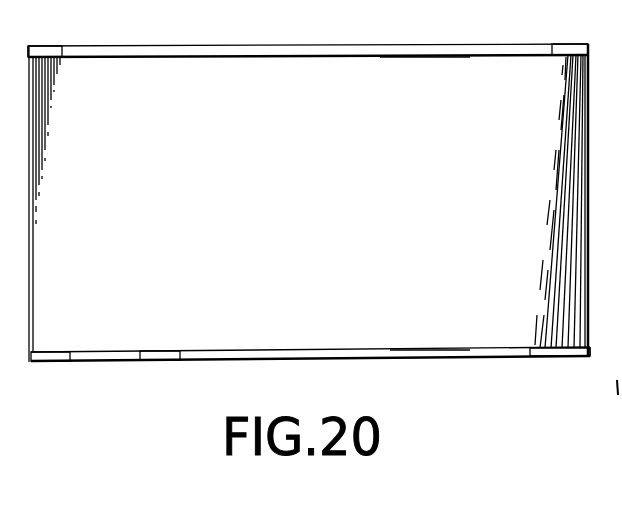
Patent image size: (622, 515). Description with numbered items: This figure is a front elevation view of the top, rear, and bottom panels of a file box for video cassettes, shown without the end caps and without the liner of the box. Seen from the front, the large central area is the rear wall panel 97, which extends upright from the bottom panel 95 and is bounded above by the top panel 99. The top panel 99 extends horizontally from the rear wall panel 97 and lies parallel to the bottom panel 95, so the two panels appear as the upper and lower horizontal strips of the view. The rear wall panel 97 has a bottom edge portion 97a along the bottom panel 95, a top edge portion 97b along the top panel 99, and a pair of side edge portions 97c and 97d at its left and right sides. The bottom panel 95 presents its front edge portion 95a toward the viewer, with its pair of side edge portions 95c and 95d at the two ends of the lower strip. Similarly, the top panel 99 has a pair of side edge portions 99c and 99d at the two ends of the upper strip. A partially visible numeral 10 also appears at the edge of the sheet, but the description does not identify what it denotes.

The assembly 10 is at (614, 21).
The bottom panel 95 is at (303, 352).
The front edge portion 95a is at (158, 353).
The side edge portion 95c is at (55, 354).
The side edge portion 95d is at (548, 339).
The rear wall panel 97 is at (322, 196).
The bottom edge portion 97a is at (429, 335).
The top edge portion 97b is at (421, 65).
The side edge portion 97c is at (40, 208).
The side edge portion 97d is at (572, 223).
The top panel 99 is at (262, 47).
The side edge portion 99c is at (48, 50).
The side edge portion 99d is at (565, 50).